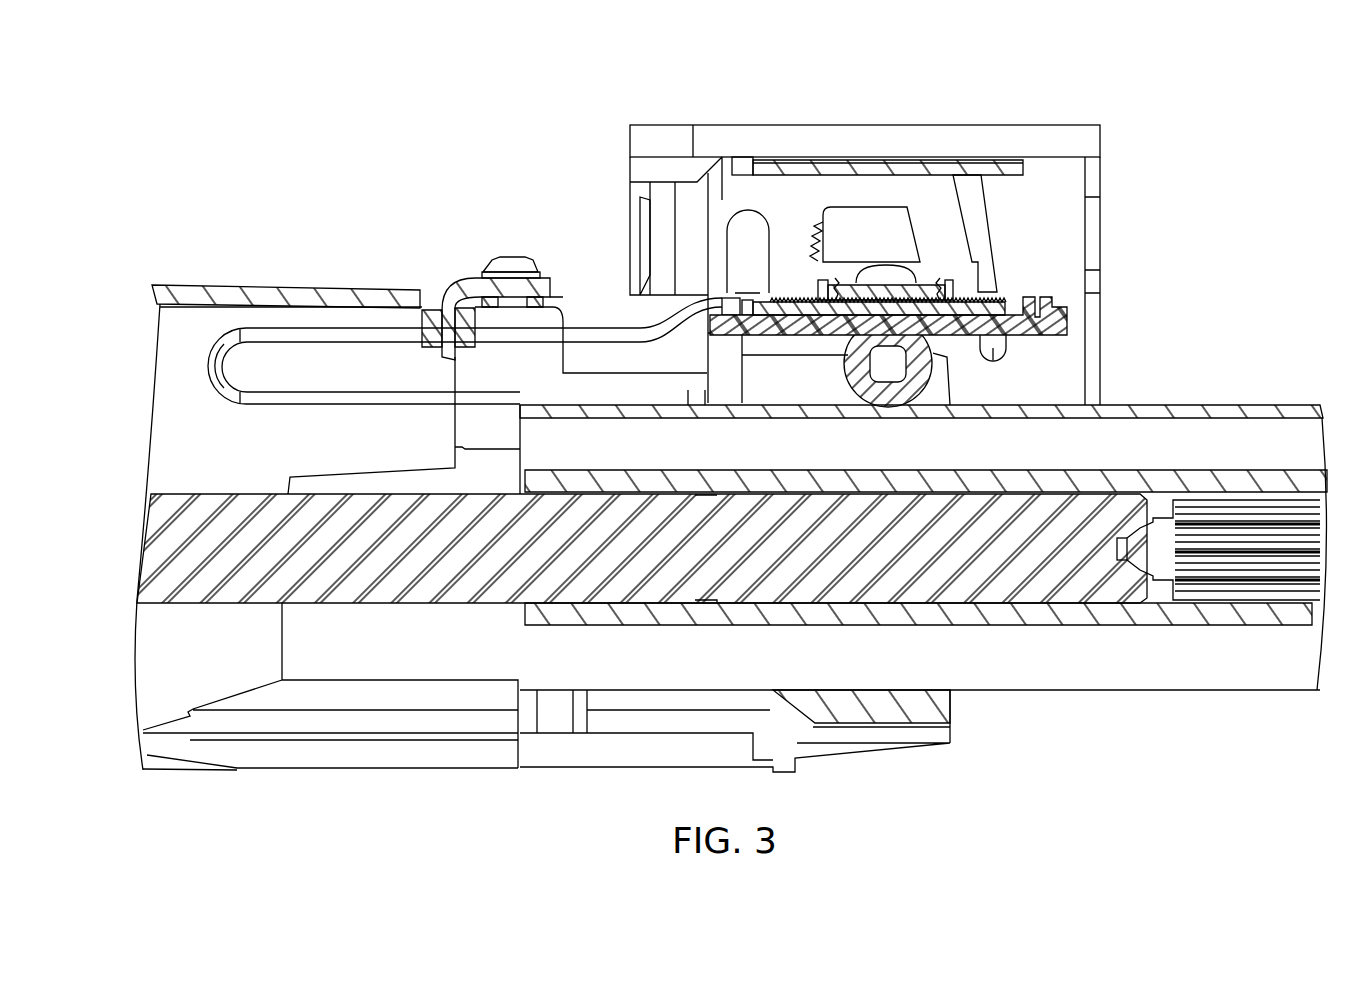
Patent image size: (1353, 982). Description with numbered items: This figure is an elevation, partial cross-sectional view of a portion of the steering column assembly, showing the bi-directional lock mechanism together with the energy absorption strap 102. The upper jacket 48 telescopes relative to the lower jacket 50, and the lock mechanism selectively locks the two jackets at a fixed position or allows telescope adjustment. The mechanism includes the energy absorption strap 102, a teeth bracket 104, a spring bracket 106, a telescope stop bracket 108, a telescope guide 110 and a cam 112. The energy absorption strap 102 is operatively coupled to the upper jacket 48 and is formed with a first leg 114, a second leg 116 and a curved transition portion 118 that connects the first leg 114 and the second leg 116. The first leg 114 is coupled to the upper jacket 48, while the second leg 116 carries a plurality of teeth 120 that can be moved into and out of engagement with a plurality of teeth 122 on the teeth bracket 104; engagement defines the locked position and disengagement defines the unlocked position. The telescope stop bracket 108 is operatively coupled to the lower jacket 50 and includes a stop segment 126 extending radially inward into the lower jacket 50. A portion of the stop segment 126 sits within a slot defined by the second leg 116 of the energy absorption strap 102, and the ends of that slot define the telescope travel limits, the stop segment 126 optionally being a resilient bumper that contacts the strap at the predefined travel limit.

The upper jacket 48 is at (1264, 404).
The lower jacket 50 is at (285, 296).
The energy absorption strap 102 is at (175, 370).
The teeth bracket 104 is at (853, 293).
The spring bracket 106 is at (945, 280).
The telescope stop bracket 108 is at (478, 280).
The telescope guide 110 is at (995, 356).
The cam 112 is at (915, 372).
The first leg 114 is at (332, 398).
The second leg 116 is at (362, 333).
The curved transition portion 118 is at (216, 360).
The teeth 120 is at (918, 290).
The teeth 122 is at (828, 312).
The stop segment 126 is at (428, 311).